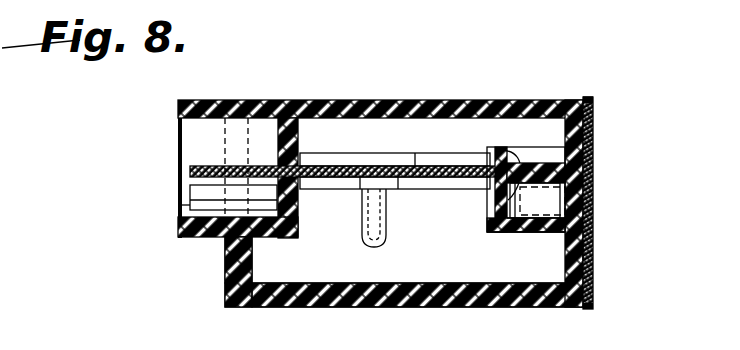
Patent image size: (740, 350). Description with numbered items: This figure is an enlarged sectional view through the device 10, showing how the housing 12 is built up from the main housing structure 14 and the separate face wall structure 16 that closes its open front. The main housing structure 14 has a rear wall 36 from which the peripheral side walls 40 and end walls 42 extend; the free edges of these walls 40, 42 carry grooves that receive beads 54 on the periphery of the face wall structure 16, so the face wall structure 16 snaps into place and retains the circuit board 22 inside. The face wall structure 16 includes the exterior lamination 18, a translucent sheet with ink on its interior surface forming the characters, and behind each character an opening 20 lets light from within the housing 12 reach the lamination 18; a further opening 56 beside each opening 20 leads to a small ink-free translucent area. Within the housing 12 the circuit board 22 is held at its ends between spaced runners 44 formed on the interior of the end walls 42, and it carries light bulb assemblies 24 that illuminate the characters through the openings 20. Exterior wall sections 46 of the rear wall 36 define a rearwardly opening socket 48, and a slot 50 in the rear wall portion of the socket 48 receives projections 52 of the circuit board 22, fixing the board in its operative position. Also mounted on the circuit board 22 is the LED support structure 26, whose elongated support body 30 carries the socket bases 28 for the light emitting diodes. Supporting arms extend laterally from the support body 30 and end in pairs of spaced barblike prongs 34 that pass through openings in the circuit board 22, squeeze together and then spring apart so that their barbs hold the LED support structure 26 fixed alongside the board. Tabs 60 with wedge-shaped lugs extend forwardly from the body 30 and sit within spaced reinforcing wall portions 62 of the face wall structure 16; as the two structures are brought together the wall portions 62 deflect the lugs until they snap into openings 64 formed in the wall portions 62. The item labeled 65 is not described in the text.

The device 10 is at (373, 182).
The housing 12 is at (300, 98).
The main housing structure 14 is at (380, 182).
The face wall structure 16 is at (598, 130).
The exterior lamination 18 is at (582, 206).
The opening 20 is at (596, 250).
The circuit board 22 is at (582, 164).
The light bulb assembly 24 is at (370, 222).
The LED support structure 26 is at (487, 230).
The socket base 28 is at (506, 236).
The support body 30 is at (492, 202).
The barblike prong 34 is at (497, 150).
The rear wall 36 is at (228, 285).
The side wall 40 is at (482, 312).
The end wall 42 is at (316, 284).
The runner 44 is at (320, 172).
The exterior wall section 46 is at (228, 75).
The socket 48 is at (195, 200).
The slot 50 is at (250, 150).
The projection 52 is at (196, 167).
The bead 54 is at (586, 97).
The opening 56 is at (604, 190).
The tab 60 is at (524, 234).
The reinforcing wall portion 62 is at (550, 143).
The opening 64 is at (586, 227).
The corner 65 is at (596, 116).